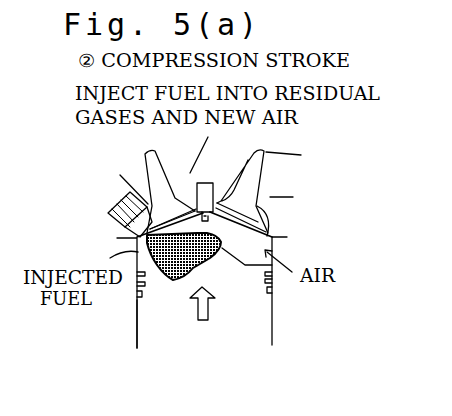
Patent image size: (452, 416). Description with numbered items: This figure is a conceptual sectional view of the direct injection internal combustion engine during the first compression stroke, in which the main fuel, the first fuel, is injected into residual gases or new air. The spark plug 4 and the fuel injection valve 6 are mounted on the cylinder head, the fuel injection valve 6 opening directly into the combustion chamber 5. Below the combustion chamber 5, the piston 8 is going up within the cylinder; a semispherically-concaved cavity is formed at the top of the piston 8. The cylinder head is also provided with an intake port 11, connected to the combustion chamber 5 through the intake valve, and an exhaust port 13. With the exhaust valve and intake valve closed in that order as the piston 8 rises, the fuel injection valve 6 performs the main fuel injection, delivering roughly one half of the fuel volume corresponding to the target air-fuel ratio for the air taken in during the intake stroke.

The spark plug 4 is at (207, 183).
The combustion chamber 5 is at (223, 250).
The fuel injection valve 6 is at (99, 201).
The piston 8 is at (153, 320).
The intake port 11 is at (169, 154).
The exhaust port 13 is at (270, 196).